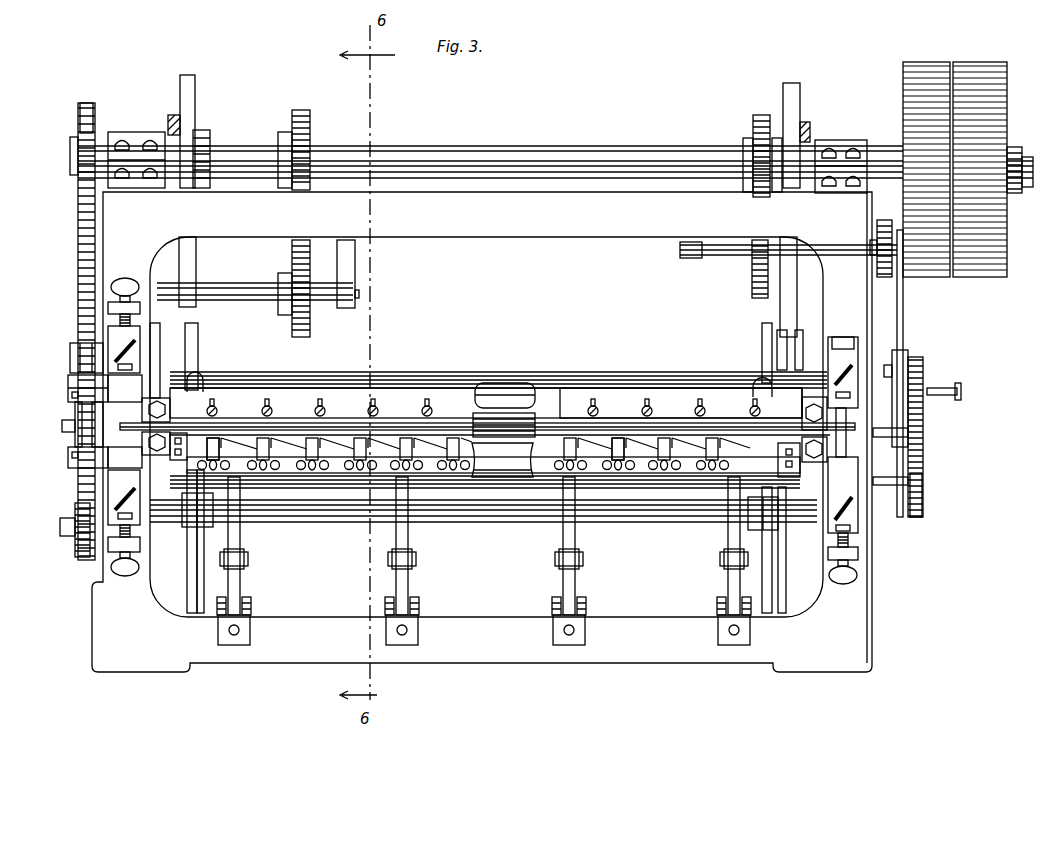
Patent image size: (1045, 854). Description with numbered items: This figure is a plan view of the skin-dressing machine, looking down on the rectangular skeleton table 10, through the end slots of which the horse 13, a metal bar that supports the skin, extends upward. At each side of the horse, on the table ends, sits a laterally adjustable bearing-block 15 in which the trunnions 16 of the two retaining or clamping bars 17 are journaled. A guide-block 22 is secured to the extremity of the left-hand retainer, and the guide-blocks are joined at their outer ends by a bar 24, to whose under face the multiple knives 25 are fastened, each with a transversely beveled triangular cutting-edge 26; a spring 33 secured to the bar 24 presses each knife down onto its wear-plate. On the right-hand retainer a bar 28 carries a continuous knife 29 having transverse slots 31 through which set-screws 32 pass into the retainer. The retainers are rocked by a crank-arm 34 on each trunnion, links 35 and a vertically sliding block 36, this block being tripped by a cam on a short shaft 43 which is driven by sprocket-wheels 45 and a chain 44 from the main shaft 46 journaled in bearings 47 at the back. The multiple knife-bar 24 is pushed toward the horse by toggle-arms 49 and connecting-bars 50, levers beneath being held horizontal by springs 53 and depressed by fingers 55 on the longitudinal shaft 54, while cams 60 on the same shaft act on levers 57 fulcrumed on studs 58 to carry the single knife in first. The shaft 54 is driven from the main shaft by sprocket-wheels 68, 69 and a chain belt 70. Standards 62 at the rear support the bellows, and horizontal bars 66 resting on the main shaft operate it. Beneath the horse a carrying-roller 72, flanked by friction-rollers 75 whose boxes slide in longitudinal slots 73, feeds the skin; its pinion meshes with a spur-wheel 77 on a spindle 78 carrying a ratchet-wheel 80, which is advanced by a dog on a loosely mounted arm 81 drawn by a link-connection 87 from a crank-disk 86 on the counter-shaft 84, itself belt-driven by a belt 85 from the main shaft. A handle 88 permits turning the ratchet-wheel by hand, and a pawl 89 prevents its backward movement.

The table 10 is at (482, 432).
The horse 13 is at (287, 430).
The bearing-block 15 is at (483, 455).
The trunnion 16 is at (158, 392).
The retaining or clamping bar 17 is at (154, 451).
The guide-block 22 is at (482, 455).
The bar 24 is at (493, 467).
The multiple knives 25 is at (352, 450).
The cutting-edge 26 is at (270, 452).
The bar 28 is at (681, 403).
The continuous knife 29 is at (653, 412).
The transverse slots 31 is at (326, 411).
The set-screw 32 is at (433, 412).
The spring 33 is at (230, 454).
The crank-arm 34 is at (60, 461).
The link 35 is at (72, 361).
The block 36 is at (92, 422).
The short shaft 43 is at (232, 280).
The chain 44 is at (292, 260).
The sprocket-wheels 45 is at (310, 140).
The main shaft 46 is at (497, 156).
The bearings 47 is at (124, 142).
The toggle-arms 49 is at (258, 541).
The connecting-bars 50 is at (250, 568).
The springs 53 is at (805, 342).
The shaft 54 is at (488, 522).
The fingers 55 is at (205, 498).
The levers 57 is at (198, 360).
The stud 58 is at (172, 323).
The cams 60 is at (192, 522).
The standards 62 is at (173, 116).
The horizontal bars 66 is at (200, 100).
The sprocket-wheel 68 is at (75, 548).
The sprocket-wheel 69 is at (78, 118).
The chain belt 70 is at (78, 242).
The carrying-roller 72 is at (504, 425).
The longitudinal slot 73 is at (505, 392).
The friction-roller 75 is at (502, 460).
The spur-wheel 77 is at (813, 455).
The spindle 78 is at (890, 440).
The ratchet-wheel 80 is at (924, 463).
The arm 81 is at (892, 404).
The counter-shaft 84 is at (736, 255).
The belt 85 is at (753, 136).
The crank-disk 86 is at (885, 278).
The link-connection 87 is at (915, 304).
The handle 88 is at (948, 387).
The pawl 89 is at (924, 490).